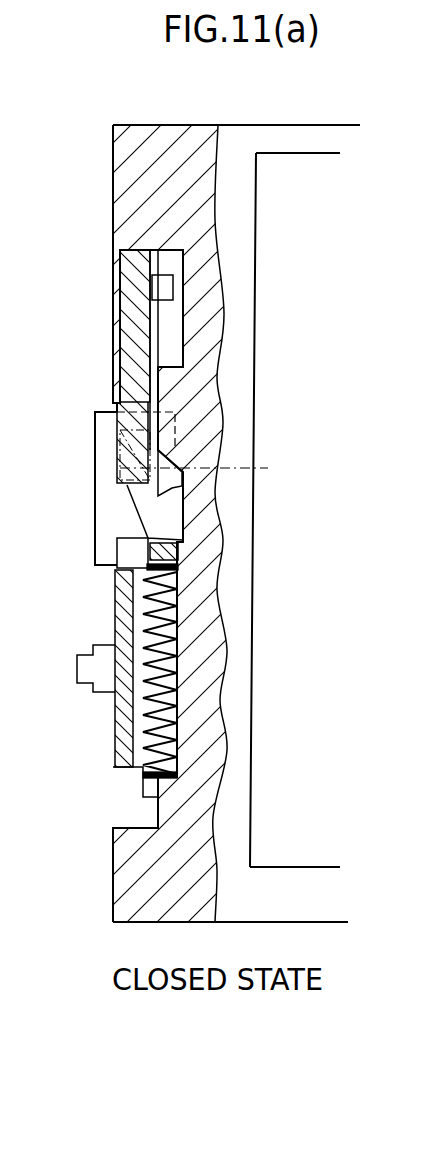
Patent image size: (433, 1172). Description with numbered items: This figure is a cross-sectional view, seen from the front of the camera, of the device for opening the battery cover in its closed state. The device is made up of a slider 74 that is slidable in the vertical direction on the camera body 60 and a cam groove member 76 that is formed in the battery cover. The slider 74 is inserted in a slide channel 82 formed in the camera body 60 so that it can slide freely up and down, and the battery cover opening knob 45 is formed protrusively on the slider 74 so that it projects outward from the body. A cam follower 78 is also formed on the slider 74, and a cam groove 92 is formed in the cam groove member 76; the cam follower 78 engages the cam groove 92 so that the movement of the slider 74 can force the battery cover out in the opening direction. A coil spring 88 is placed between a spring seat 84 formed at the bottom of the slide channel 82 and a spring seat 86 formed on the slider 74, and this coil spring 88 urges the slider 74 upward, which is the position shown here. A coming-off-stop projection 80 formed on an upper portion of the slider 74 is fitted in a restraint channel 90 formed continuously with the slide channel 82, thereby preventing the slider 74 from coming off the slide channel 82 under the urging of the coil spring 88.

The camera body 60 is at (143, 192).
The slider 74 is at (118, 733).
The cam groove member 76 is at (75, 470).
The cam follower 78 is at (218, 464).
The coming-off-stop projection 80 is at (172, 287).
The slide channel 82 is at (128, 790).
The spring seat 84 is at (155, 778).
The spring seat 86 is at (178, 550).
The coil spring 88 is at (178, 657).
The restraint channel 90 is at (172, 322).
The cam groove 92 is at (147, 505).
The battery cover opening knob 45 is at (79, 668).